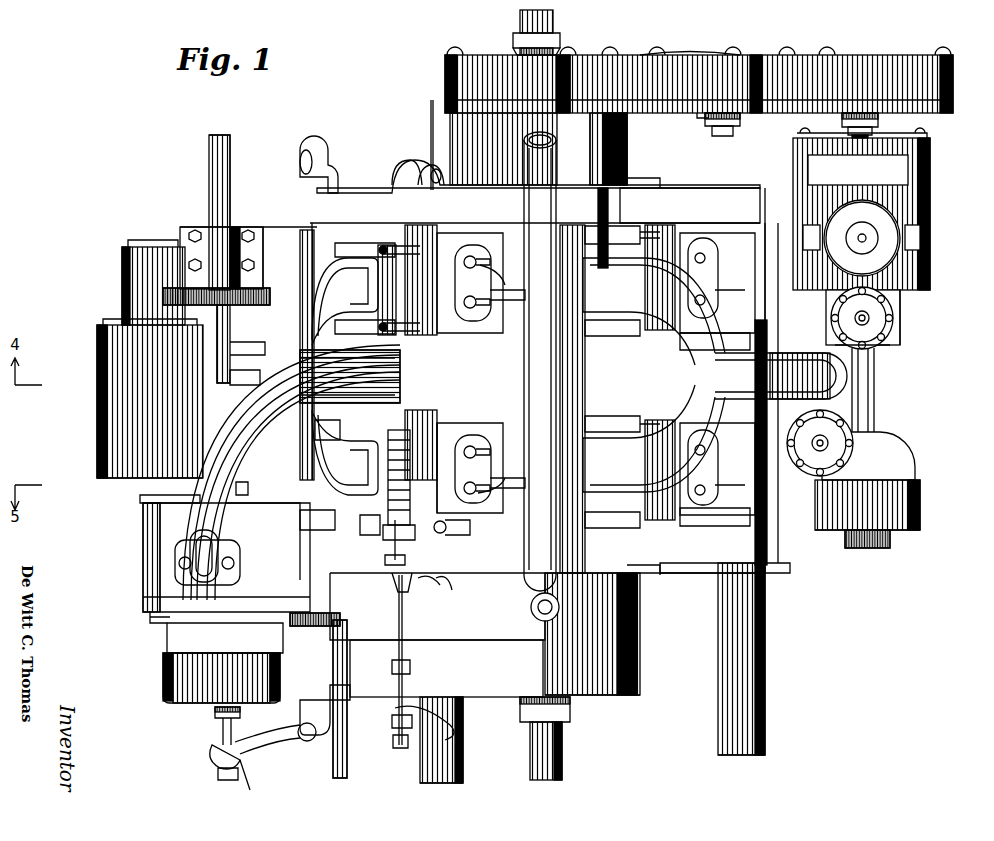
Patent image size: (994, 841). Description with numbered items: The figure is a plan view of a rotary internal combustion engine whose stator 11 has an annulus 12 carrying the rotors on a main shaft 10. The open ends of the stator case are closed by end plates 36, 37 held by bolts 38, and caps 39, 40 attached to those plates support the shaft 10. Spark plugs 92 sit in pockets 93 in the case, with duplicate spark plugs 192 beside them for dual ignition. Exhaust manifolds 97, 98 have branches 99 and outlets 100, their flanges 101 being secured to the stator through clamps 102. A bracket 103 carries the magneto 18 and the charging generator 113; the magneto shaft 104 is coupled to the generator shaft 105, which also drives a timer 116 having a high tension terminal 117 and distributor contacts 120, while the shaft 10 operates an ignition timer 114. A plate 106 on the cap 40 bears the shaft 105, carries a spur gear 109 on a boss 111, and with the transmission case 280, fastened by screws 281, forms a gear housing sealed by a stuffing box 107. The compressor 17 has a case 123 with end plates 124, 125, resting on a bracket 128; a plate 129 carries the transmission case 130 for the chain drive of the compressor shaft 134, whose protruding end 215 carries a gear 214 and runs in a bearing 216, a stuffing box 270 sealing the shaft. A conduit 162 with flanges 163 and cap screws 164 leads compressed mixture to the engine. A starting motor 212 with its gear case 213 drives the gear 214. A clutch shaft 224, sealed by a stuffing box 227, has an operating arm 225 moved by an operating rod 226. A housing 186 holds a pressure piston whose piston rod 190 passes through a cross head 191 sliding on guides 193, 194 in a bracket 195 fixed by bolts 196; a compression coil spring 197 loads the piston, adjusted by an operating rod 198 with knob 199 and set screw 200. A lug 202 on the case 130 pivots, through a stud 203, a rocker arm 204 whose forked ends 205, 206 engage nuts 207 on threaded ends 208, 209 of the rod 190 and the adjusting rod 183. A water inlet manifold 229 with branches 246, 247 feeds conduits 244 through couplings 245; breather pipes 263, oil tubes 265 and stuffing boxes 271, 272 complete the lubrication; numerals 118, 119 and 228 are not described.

The shaft 10 is at (562, 770).
The stator 11 is at (762, 470).
The annulus 12 is at (762, 345).
The compressor 17 is at (155, 595).
The magneto 18 is at (920, 498).
The end plate 36 is at (676, 568).
The end plate 37 is at (718, 200).
The bolts 38 is at (640, 573).
The cap 39 is at (637, 632).
The cap 40 is at (612, 150).
The spark plugs 92 is at (700, 495).
The pockets 93 is at (705, 470).
The exhaust manifold 97 is at (245, 380).
The exhaust manifold 98 is at (778, 385).
The branches 99 is at (630, 452).
The outlets 100 is at (443, 770).
The flanges 101 is at (305, 520).
The clamps 102 is at (325, 525).
The bracket 103 is at (908, 458).
The magneto shaft 104 is at (878, 395).
The generator shaft 105 is at (885, 127).
The plate 106 is at (757, 110).
The stuffing box 107 is at (862, 100).
The spur gear 109 is at (722, 128).
The boss 111 is at (697, 118).
The charging generator 113 is at (928, 195).
The ignition timer 114 is at (800, 460).
The timer 116 is at (893, 338).
The high tension terminal 117 is at (870, 318).
The disc 118 is at (862, 238).
The ring 119 is at (882, 260).
The distributor contacts 120 is at (822, 335).
The case 123 is at (160, 553).
The end plate 124 is at (190, 513).
The end plate 125 is at (145, 622).
The bracket 128 is at (145, 495).
The plate 129 is at (160, 655).
The transmission case 130 is at (205, 690).
The compressor shaft 134 is at (224, 345).
The conduit 162 is at (160, 545).
The flanges 163 is at (228, 560).
The cap screws 164 is at (226, 568).
The adjusting rod 183 is at (235, 722).
The housing 186 is at (215, 716).
The piston rod 190 is at (428, 686).
The cross head 191 is at (355, 525).
The spark plugs 192 is at (528, 336).
The guide 193 is at (385, 530).
The guide 194 is at (455, 445).
The bracket 195 is at (390, 560).
The bolts 196 is at (445, 527).
The compression coil spring 197 is at (325, 430).
The operating rod 198 is at (400, 615).
The operating knob 199 is at (412, 667).
The set screw 200 is at (392, 530).
The lug 202 is at (316, 708).
The stud 203 is at (305, 745).
The rocker arm 204 is at (277, 742).
The forked end 205 is at (215, 760).
The forked end 206 is at (455, 732).
The nuts 207 is at (245, 780).
The threaded end 208 is at (225, 775).
The threaded end 209 is at (398, 745).
The starting motor 212 is at (115, 395).
The case 213 is at (125, 262).
The gear 214 is at (275, 285).
The protruding end 215 is at (212, 158).
The bearing 216 is at (215, 240).
The shaft 224 is at (305, 618).
The operating arm 225 is at (340, 620).
The operating rod 226 is at (340, 690).
The stuffing box 227 is at (280, 638).
The pipe 228 is at (532, 362).
The water inlet manifold 229 is at (325, 160).
The conduit 244 is at (440, 588).
The coupling 245 is at (430, 600).
The branch 246 is at (395, 585).
The branch 247 is at (395, 165).
The breather pipes 263 is at (628, 608).
The oil tubes 265 is at (520, 482).
The stuffing box 270 is at (245, 488).
The stuffing box 271 is at (562, 47).
The stuffing box 272 is at (568, 713).
The transmission case 280 is at (848, 60).
The screws 281 is at (735, 52).